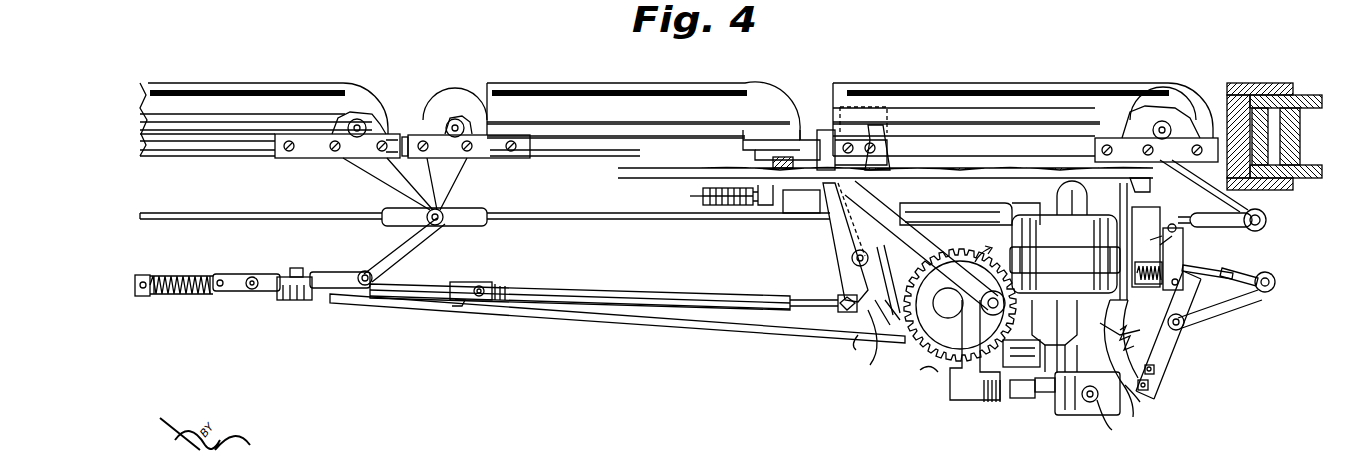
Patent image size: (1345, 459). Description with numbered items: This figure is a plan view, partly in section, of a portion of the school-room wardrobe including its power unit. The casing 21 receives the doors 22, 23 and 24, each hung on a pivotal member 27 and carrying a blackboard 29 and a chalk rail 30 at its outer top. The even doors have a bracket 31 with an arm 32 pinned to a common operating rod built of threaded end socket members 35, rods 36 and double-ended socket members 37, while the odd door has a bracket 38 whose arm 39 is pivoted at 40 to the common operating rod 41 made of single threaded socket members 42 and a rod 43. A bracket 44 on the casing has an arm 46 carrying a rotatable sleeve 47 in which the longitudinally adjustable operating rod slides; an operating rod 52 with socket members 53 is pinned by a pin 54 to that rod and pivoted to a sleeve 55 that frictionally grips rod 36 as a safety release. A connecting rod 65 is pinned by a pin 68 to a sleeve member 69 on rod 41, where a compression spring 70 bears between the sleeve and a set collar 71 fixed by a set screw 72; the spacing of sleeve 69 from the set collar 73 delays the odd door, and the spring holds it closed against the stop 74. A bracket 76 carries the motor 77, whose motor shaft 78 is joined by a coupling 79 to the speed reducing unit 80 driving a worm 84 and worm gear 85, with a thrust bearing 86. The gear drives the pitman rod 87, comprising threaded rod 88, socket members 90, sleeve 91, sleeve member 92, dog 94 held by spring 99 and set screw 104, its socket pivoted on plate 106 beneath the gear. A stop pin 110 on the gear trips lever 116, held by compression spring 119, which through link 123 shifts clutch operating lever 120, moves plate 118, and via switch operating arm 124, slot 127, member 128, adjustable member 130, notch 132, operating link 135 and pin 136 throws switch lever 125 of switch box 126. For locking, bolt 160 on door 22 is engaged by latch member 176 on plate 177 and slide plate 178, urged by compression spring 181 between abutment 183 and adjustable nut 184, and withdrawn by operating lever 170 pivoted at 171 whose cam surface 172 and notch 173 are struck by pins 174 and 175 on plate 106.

The door frame or casing 21 is at (1247, 88).
The door 22 is at (1002, 138).
The door 23 is at (605, 138).
The door 24 is at (215, 140).
The pivotal member 27 is at (368, 118).
The blackboard 29 is at (193, 136).
The chalk rail 30 is at (292, 95).
The bracket 31 is at (305, 150).
The inwardly extending arm 32 is at (368, 170).
The threaded end socket member 35 is at (1262, 230).
The rod 36 is at (186, 214).
The intermediate double-ended threaded socket member 37 is at (468, 226).
The bracket 38 is at (494, 150).
The inwardly extending arm 39 is at (400, 232).
The pivotal connection 40 is at (366, 270).
The common operating rod 41 is at (142, 276).
The single threaded socket member 42 is at (338, 290).
The rod 43 is at (168, 296).
The bracket 44 is at (1160, 190).
The inwardly extending arm 46 is at (1218, 316).
The sleeve 47 is at (1195, 328).
The operating rod 52 is at (1225, 268).
The threaded socket member 53 is at (978, 198).
The pin 54 is at (1266, 292).
The sleeve 55 is at (925, 210).
The connecting rod 65 is at (752, 332).
The pin 68 is at (254, 277).
The sleeve member 69 is at (240, 292).
The compression spring 70 is at (206, 278).
The set collar 71 is at (144, 290).
The set screw 72 is at (160, 278).
The set collar 73 is at (300, 268).
The stop 74 is at (782, 156).
The bracket 76 is at (1032, 204).
The motor 77 is at (1065, 237).
The motor shaft 78 is at (1045, 320).
The coupling 79 is at (1120, 326).
The speed reducing unit 80 is at (1102, 408).
The worm 84 is at (990, 403).
The worm gear 85 is at (935, 378).
The thrust bearing 86 is at (950, 392).
The pitman rod 87 is at (672, 300).
The threaded rod 88 is at (428, 292).
The threaded socket member 90 is at (296, 292).
The sleeve 91 is at (618, 296).
The sleeve member 92 is at (470, 284).
The dog 94 is at (462, 304).
The spring 99 is at (806, 296).
The set screw 104 is at (840, 300).
The plate 106 is at (903, 340).
The stop pin 110 is at (925, 290).
The lever 116 is at (1115, 405).
The plate 118 is at (1003, 350).
The compression spring 119 is at (1152, 354).
The clutch operating lever 120 is at (1025, 398).
The link 123 is at (1040, 392).
The switch operating arm 124 is at (1183, 240).
The switch lever 125 is at (1172, 226).
The switch box 126 is at (1140, 241).
The slot 127 is at (1158, 368).
The member 128 is at (1150, 384).
The adjustable member 130 is at (1160, 264).
The notch 132 is at (1178, 256).
The operating link 135 is at (1150, 342).
The pin 136 is at (1138, 398).
The bolt 160 is at (848, 148).
The operating lever 170 is at (848, 240).
The pivot 171 is at (830, 262).
The cam surface 172 is at (878, 368).
The notch 173 is at (872, 325).
The pin 174 is at (948, 303).
The pin 175 is at (958, 312).
The latch member 176 is at (890, 130).
The plate 177 is at (740, 160).
The slide plate 178 is at (782, 212).
The compression spring 181 is at (750, 208).
The abutment 183 is at (757, 215).
The adjustable nut 184 is at (700, 196).